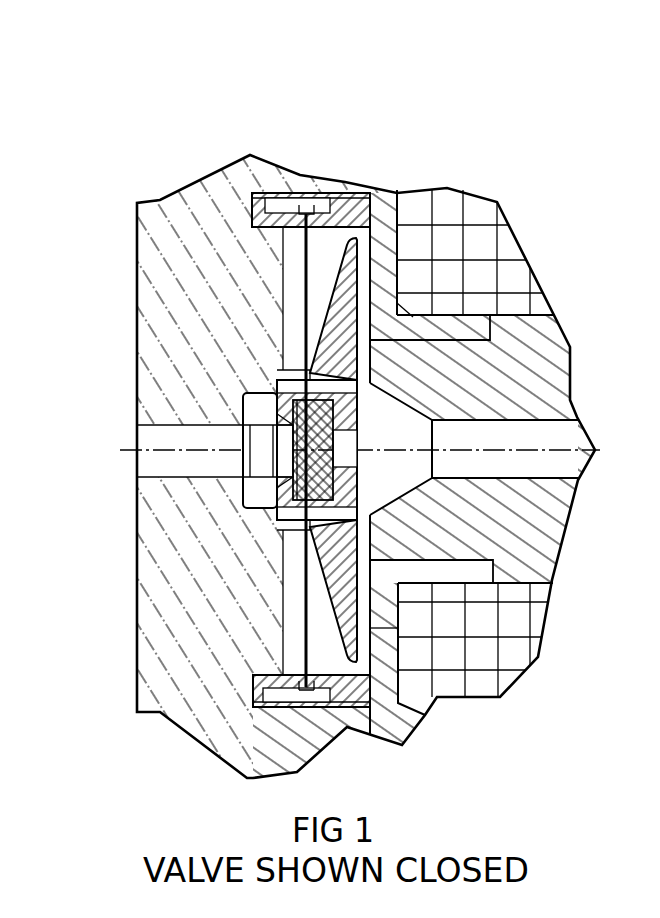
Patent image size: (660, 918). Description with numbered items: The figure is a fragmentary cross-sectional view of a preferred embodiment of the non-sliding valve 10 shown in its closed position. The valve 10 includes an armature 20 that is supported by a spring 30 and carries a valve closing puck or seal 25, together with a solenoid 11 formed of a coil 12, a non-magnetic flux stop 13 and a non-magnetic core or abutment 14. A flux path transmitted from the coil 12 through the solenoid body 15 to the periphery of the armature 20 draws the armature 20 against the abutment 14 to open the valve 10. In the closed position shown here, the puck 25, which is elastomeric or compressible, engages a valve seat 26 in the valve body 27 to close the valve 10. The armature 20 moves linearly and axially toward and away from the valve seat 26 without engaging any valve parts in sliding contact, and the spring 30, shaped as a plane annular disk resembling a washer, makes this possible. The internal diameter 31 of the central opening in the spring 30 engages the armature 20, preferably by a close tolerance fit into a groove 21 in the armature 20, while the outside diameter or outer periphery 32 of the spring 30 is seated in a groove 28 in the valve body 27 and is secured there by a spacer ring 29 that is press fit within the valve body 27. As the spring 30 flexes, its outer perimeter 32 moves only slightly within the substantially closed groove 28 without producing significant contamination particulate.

The non-sliding valve 10 is at (360, 381).
The solenoid 11 is at (372, 466).
The coil 12 is at (502, 236).
The non-magnetic flux stop 13 is at (489, 418).
The non-magnetic core or abutment 14 is at (501, 214).
The solenoid body 15 is at (452, 214).
The armature 20 is at (457, 354).
The groove 21 is at (172, 446).
The valve closing puck or seal 25 is at (192, 378).
The valve seat 26 is at (204, 426).
The valve body 27 is at (355, 136).
The groove 28 is at (349, 366).
The spacer ring 29 is at (190, 134).
The spring 30 is at (224, 445).
The internal diameter 31 is at (210, 452).
The outside diameter or outer periphery 32 is at (250, 368).